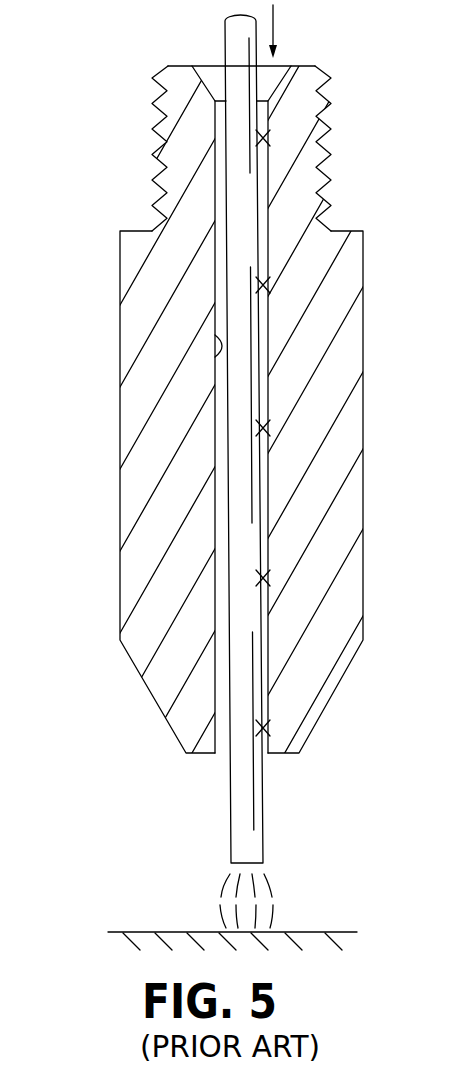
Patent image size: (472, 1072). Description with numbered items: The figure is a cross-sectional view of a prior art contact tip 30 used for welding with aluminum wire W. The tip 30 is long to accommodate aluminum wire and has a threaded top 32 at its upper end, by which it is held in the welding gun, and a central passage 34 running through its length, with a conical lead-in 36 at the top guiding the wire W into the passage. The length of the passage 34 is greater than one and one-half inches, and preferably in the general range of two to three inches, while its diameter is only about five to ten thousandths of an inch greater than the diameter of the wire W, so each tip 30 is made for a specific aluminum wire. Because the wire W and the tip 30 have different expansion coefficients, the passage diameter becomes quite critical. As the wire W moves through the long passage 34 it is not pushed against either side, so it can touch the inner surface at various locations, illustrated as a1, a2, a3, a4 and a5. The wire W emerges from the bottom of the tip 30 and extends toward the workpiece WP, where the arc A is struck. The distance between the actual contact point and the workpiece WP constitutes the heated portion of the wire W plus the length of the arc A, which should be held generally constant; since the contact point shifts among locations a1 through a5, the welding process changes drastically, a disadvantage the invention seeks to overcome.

The contact tip 30 is at (370, 251).
The threaded top 32 is at (153, 125).
The central passage 34 is at (215, 355).
The conical lead-in 36 is at (207, 78).
The wire W is at (238, 802).
The workpiece WP is at (167, 932).
The arc A is at (273, 882).
The contact location a1 is at (270, 135).
The contact location a2 is at (268, 285).
The contact location a3 is at (268, 427).
The contact location a4 is at (268, 577).
The contact location a5 is at (268, 729).